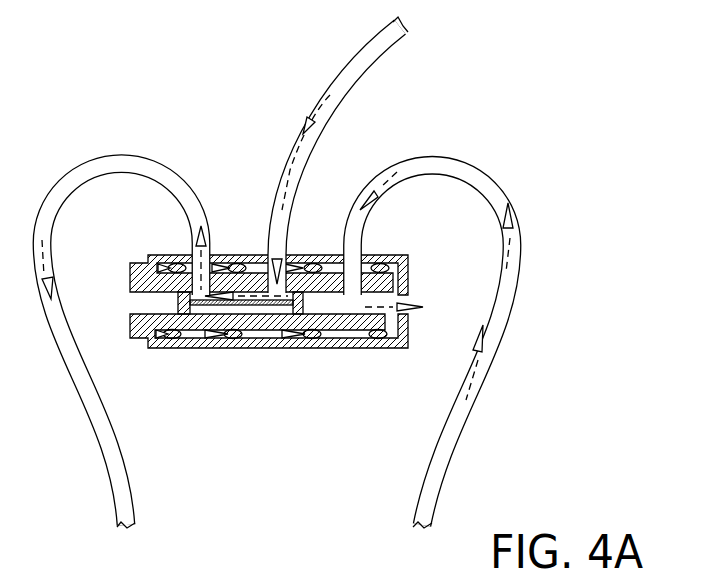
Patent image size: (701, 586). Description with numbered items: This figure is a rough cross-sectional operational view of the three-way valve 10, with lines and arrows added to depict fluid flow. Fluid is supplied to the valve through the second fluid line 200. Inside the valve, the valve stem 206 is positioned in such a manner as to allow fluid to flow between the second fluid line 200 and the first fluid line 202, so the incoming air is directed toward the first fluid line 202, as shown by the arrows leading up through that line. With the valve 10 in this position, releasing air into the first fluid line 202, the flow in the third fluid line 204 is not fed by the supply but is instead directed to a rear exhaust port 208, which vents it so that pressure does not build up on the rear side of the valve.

The three-way valve 10 is at (508, 113).
The second fluid line 200 is at (330, 107).
The first fluid line 202 is at (145, 160).
The third fluid line 204 is at (473, 172).
The valve stem 206 is at (278, 305).
The rear exhaust port 208 is at (413, 302).